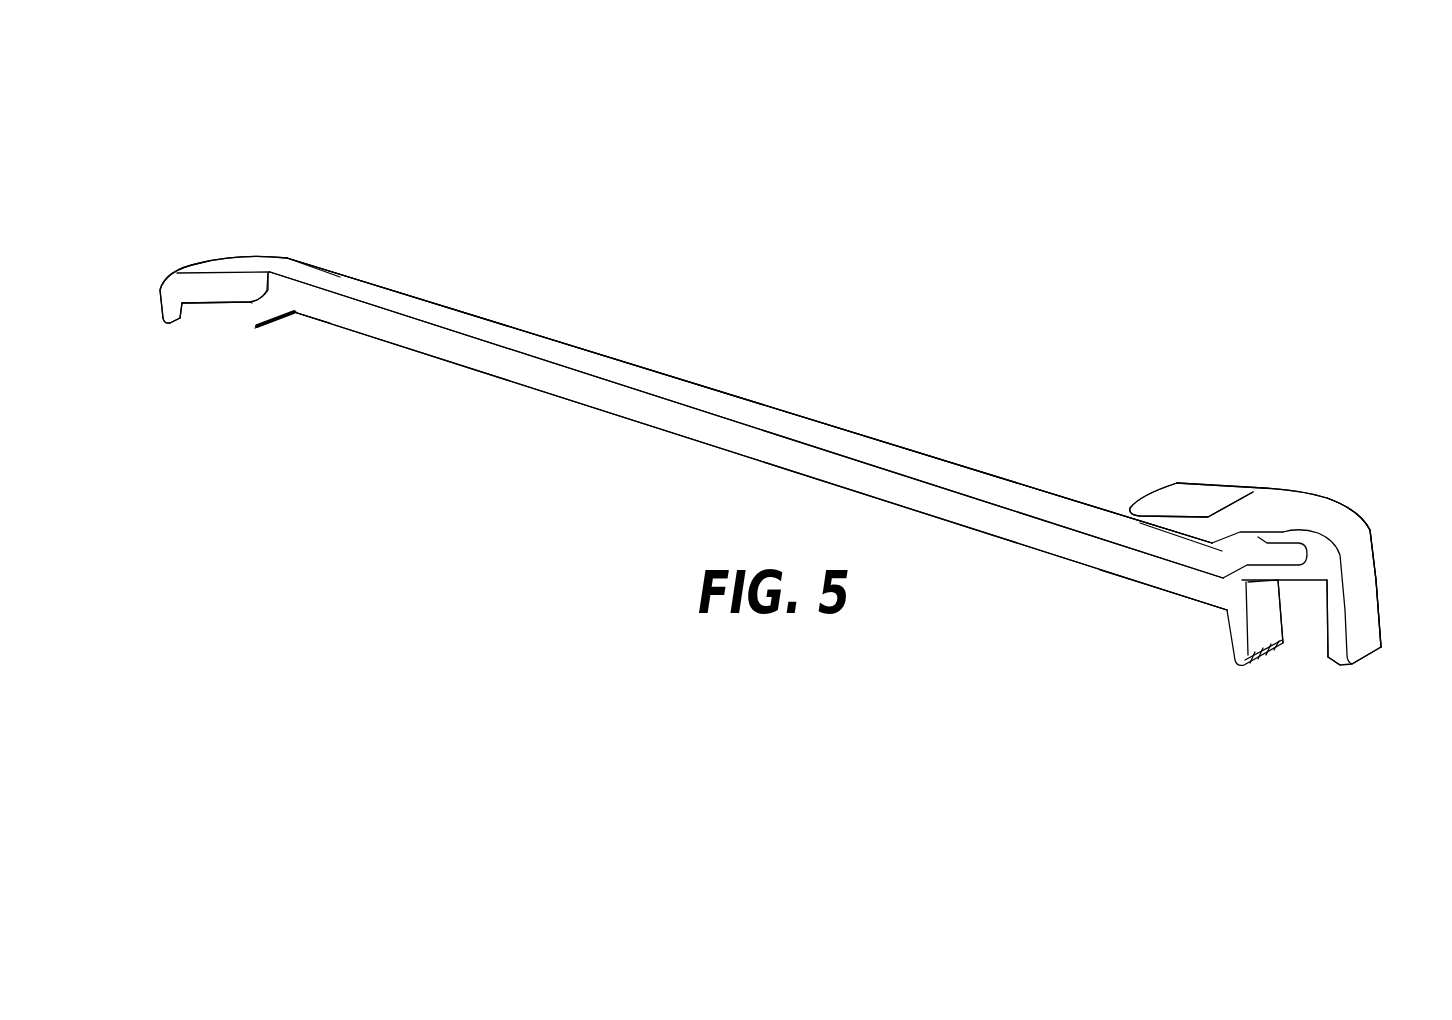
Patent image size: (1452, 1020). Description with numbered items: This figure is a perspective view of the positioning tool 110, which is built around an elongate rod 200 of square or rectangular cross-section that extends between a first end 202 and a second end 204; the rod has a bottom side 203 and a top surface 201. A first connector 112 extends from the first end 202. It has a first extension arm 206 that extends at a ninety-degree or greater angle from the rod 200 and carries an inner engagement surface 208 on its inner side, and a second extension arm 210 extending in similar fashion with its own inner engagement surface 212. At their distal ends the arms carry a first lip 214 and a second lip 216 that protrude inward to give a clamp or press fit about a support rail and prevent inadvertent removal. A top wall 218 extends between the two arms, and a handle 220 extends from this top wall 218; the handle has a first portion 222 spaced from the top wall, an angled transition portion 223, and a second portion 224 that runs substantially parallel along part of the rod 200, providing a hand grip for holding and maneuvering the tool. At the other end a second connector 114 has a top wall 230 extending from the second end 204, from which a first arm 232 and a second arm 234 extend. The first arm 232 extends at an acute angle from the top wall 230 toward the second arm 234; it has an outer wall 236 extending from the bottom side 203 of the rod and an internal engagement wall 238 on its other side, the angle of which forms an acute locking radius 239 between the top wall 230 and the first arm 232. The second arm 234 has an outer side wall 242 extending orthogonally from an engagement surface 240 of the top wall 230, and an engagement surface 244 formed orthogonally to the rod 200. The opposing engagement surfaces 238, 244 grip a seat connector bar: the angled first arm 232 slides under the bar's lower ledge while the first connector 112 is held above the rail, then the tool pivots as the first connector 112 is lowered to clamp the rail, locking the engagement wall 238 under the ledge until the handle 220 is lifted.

The positioning tool 110 is at (770, 383).
The first connector 112 is at (1365, 499).
The second connector 114 is at (184, 243).
The elongate rod 200 is at (853, 444).
The top surface 201 is at (670, 386).
The first end 202 is at (1207, 603).
The bottom side 203 is at (722, 448).
The second end 204 is at (328, 267).
The first extension arm 206 is at (1228, 650).
The inner engagement surface 208 is at (1267, 613).
The second extension arm 210 is at (1363, 628).
The inner engagement surface 212 is at (1325, 610).
The first lip 214 is at (1283, 640).
The second lip 216 is at (1327, 655).
The top wall 218 is at (1360, 533).
The handle 220 is at (1297, 516).
The first portion 222 is at (1265, 521).
The angled transition portion 223 is at (1230, 497).
The second portion 224 is at (1180, 485).
The top wall 230 is at (233, 293).
The first arm 232 is at (257, 325).
The second arm 234 is at (165, 314).
The outer wall 236 is at (297, 313).
The internal engagement wall 238 is at (252, 303).
The acute locking radius 239 is at (267, 294).
The engagement surface 240 is at (224, 311).
The outer side wall 242 is at (158, 303).
The engagement surface 244 is at (198, 316).